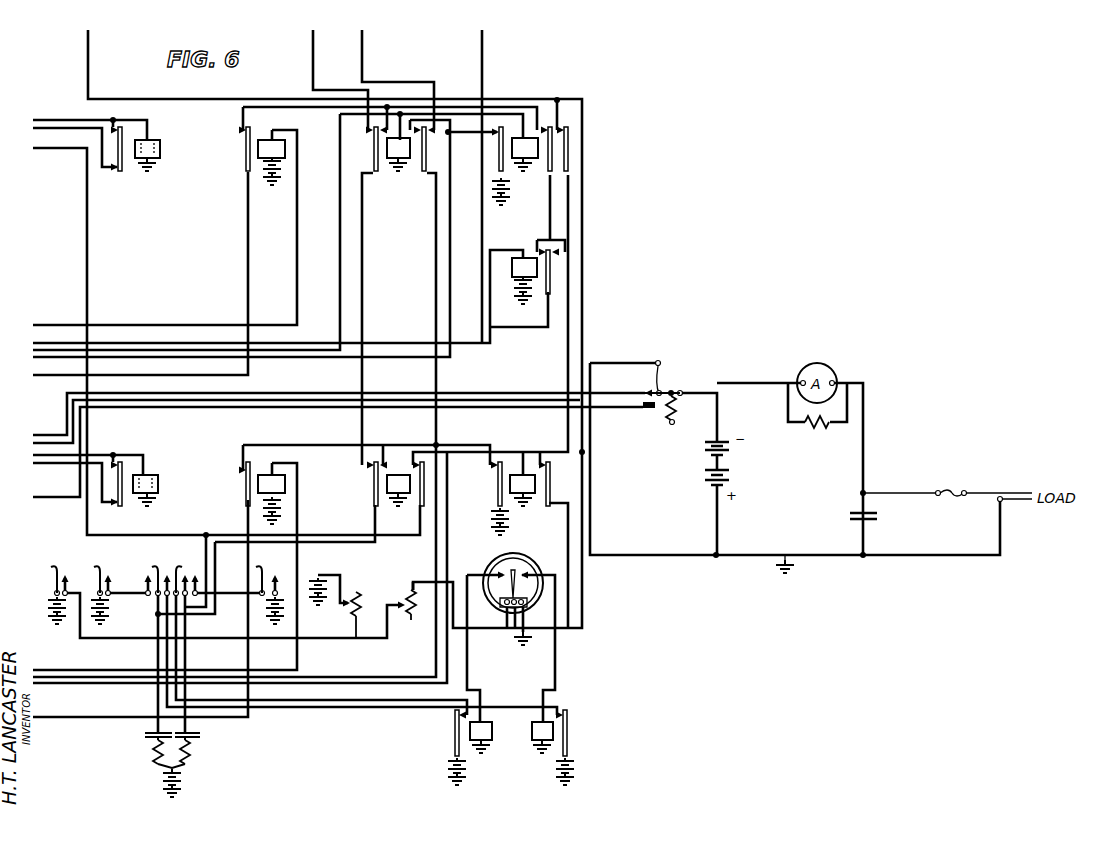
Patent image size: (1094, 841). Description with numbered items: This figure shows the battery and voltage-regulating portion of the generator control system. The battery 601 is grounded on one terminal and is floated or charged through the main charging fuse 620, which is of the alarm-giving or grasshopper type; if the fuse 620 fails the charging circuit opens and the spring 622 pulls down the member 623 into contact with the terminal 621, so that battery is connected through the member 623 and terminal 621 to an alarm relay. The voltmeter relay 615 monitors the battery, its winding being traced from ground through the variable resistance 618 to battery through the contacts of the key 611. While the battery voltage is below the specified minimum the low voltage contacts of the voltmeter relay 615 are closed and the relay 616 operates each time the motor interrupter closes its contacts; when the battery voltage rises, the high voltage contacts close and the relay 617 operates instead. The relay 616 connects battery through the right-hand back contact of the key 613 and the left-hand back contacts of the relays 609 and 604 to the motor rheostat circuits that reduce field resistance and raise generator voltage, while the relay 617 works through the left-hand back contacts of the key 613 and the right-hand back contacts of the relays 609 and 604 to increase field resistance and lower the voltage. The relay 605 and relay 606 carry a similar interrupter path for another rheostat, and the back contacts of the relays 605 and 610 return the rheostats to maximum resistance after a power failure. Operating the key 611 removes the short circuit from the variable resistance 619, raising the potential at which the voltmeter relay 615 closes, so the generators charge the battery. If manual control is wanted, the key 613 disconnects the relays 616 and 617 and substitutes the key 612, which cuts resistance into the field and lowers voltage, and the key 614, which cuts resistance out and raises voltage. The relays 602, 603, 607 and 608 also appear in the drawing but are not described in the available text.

The battery 601 is at (721, 470).
The relay 602 is at (152, 140).
The relay 603 is at (272, 130).
The relay 604 is at (387, 148).
The relay 605 is at (538, 148).
The relay 606 is at (537, 268).
The relay 607 is at (148, 475).
The relay 608 is at (270, 475).
The relay 609 is at (398, 475).
The relay 610 is at (525, 475).
The key 611 is at (55, 562).
The key 612 is at (100, 572).
The key 613 is at (178, 568).
The key 614 is at (264, 572).
The voltmeter relay 615 is at (525, 557).
The relay 616 is at (492, 735).
The relay 617 is at (530, 737).
The variable resistance 618 is at (406, 590).
The variable resistance 619 is at (343, 575).
The fuse 620 is at (661, 364).
The terminal 621 is at (652, 410).
The spring 622 is at (677, 406).
The member 623 is at (672, 392).